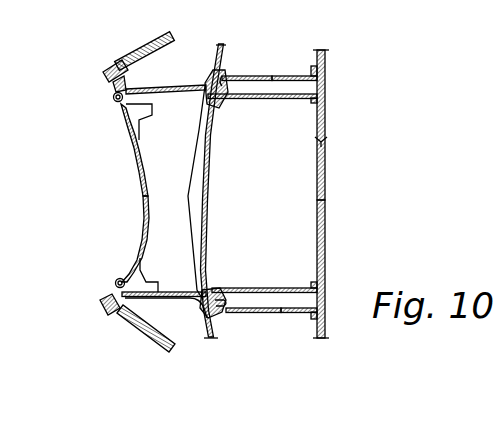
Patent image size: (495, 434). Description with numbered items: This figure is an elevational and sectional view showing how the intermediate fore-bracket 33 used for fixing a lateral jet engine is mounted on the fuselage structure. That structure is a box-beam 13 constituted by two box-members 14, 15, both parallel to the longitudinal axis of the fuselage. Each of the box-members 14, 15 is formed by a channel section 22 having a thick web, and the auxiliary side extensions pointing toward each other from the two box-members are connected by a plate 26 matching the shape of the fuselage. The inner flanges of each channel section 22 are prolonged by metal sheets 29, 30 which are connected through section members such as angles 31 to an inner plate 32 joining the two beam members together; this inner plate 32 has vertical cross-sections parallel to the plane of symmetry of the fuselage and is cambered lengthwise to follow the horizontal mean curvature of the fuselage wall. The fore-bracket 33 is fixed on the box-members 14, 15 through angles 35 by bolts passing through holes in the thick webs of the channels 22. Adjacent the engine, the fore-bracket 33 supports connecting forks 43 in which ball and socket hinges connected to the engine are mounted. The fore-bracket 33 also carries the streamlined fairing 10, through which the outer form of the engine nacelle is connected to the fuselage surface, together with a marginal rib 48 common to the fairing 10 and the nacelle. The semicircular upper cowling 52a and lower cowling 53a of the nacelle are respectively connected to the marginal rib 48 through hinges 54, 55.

The fairing 10 is at (206, 84).
The box-beam 13 is at (327, 141).
The box-member 14 is at (292, 304).
The box-member 15 is at (313, 74).
The channel section 22 is at (234, 75).
The plate 26 is at (210, 155).
The metal sheet 29 is at (277, 289).
The metal sheet 30 is at (250, 313).
The angle 31 is at (315, 101).
The inner plate 32 is at (326, 216).
The fore-bracket 33 is at (160, 207).
The angle 35 is at (213, 105).
The connecting fork 43 is at (115, 103).
The marginal rib 48 is at (141, 188).
The upper cowling 52a is at (170, 44).
The lower cowling 53a is at (159, 341).
The hinge 54 is at (104, 73).
The hinge 55 is at (103, 312).